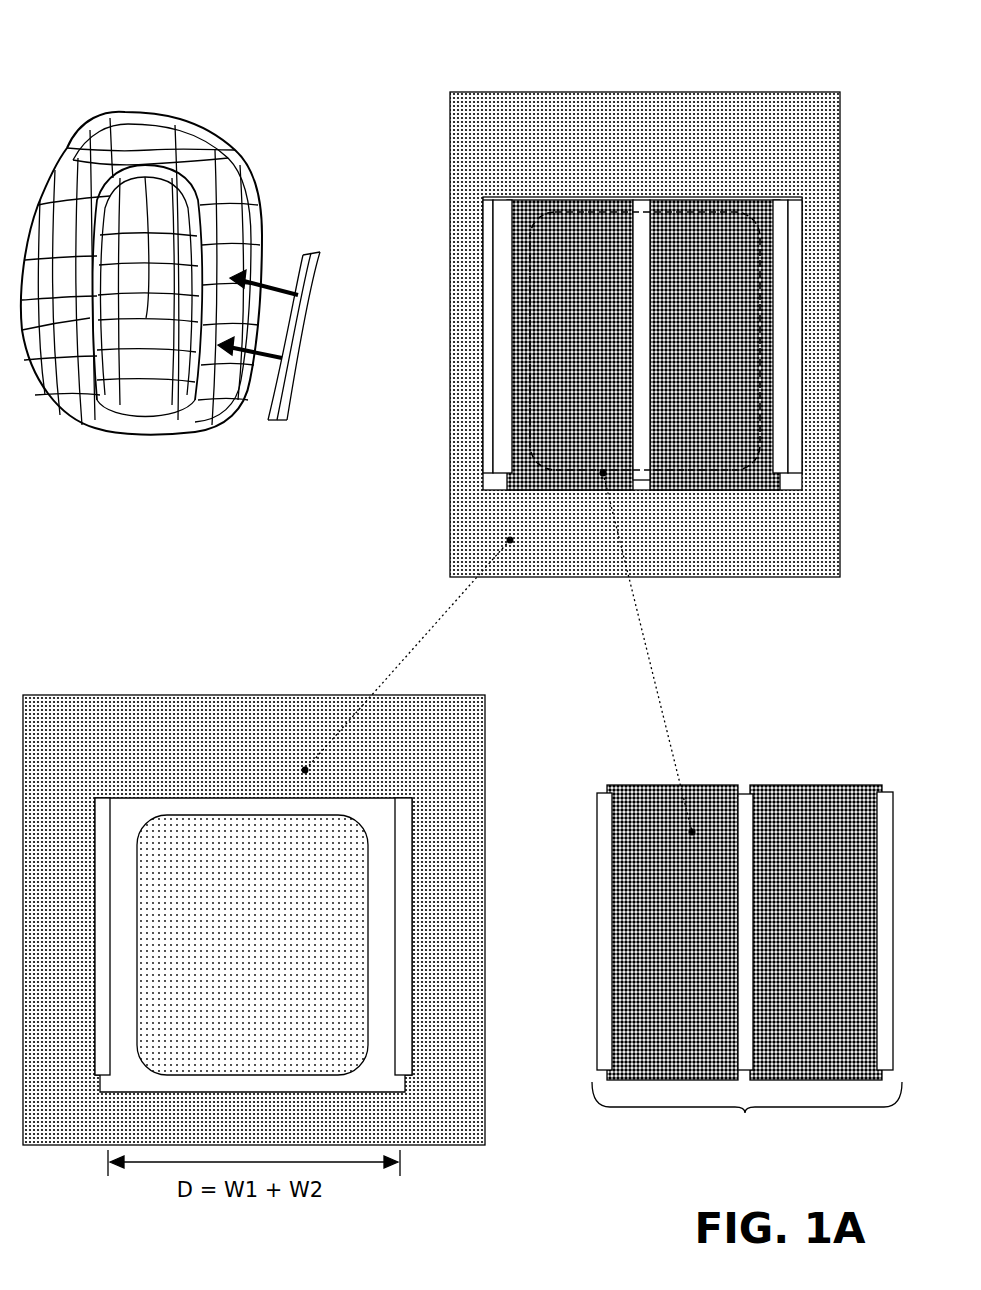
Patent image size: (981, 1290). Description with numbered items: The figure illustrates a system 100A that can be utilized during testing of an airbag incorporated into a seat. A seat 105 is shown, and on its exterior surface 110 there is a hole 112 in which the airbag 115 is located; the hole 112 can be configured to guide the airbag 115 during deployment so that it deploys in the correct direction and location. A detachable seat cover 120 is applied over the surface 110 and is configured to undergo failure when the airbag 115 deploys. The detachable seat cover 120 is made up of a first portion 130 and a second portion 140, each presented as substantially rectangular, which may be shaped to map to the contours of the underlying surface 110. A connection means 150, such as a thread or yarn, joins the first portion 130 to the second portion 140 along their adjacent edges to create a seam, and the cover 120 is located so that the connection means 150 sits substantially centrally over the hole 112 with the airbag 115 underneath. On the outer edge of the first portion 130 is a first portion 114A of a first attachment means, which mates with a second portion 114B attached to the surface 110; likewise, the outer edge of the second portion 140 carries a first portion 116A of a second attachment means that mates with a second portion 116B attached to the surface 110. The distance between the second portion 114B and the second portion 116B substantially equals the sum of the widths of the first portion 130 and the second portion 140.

The system 100A is at (130, 26).
The seat 105 is at (168, 117).
The detachable seat cover 120 is at (275, 382).
The surface of the seat 110 is at (822, 170).
The hole 112 is at (372, 1082).
The first portion of first attachment means 114A is at (505, 320).
The second portion of first attachment means 114B is at (485, 212).
The first portion of second attachment means 116A is at (783, 448).
The second portion of second attachment means 116B is at (798, 250).
The airbag 115 is at (532, 373).
The first portion 130 is at (532, 210).
The second portion 140 is at (758, 208).
The connection means 150 is at (647, 263).